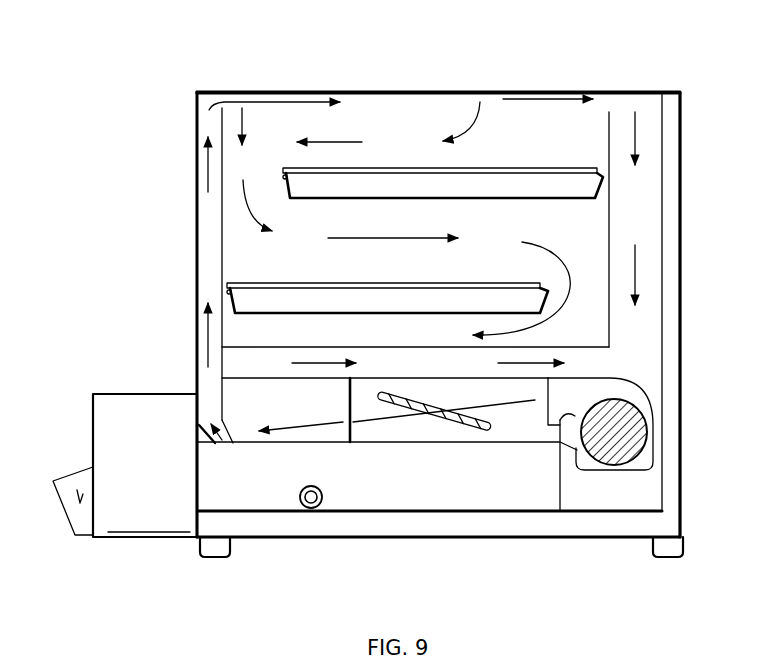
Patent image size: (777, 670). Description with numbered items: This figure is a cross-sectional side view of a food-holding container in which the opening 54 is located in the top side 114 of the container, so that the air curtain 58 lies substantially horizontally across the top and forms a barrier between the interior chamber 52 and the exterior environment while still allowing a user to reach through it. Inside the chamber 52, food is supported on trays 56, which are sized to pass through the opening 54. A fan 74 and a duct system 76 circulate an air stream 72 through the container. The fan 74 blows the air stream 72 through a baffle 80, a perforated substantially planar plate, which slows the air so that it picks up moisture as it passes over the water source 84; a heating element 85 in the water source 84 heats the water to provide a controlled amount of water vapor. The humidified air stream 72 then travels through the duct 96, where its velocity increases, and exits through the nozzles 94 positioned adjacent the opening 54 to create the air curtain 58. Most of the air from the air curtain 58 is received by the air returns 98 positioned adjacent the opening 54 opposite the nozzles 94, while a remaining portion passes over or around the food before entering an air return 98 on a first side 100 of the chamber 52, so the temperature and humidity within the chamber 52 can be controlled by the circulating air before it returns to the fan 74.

The interior chamber 52 is at (545, 125).
The opening 54 is at (429, 80).
The trays 56 is at (498, 295).
The air curtain 58 is at (512, 99).
The air stream 72 is at (208, 160).
The fan 74 is at (630, 390).
The duct system 76 is at (210, 405).
The baffle 80 is at (345, 428).
The water source 84 is at (462, 492).
The heating element 85 is at (311, 510).
The nozzles 94 is at (206, 105).
The duct 96 is at (207, 435).
The air returns 98 is at (613, 100).
The first side 100 is at (583, 340).
The top side 114 is at (638, 90).